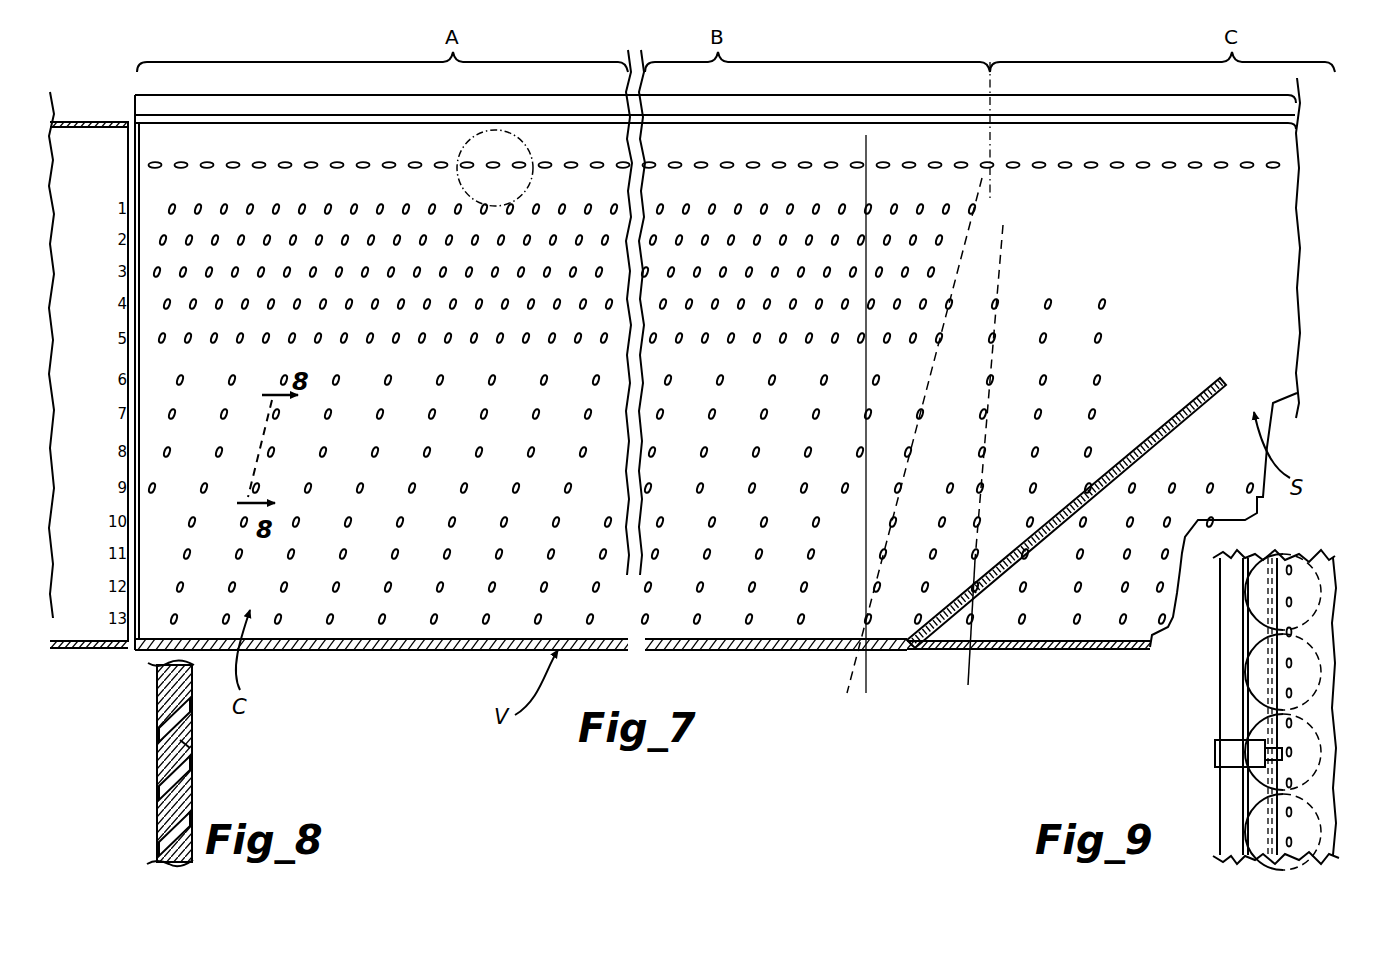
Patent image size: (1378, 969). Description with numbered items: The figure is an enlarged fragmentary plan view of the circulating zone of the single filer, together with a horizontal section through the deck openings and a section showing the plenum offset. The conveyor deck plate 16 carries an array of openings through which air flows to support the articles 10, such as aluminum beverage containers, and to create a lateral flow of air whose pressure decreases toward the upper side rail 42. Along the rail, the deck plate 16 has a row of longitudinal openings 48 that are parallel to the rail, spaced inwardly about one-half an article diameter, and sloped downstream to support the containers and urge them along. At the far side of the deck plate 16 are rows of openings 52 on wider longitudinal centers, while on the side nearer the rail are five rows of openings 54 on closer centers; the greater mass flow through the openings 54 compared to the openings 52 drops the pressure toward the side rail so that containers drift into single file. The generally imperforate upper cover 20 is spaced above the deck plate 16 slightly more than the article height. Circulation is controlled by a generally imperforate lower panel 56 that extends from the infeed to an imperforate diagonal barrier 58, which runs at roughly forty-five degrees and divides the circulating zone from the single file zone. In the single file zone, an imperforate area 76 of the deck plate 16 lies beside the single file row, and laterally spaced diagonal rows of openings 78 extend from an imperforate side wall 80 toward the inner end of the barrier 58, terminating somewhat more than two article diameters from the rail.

In FIG. 7, the article 10 is at (522, 130).
In FIG. 9, the article 10 is at (1258, 728).
In FIG. 7, the deck plate 16 is at (152, 142).
In FIG. 8, the deck plate 16 is at (160, 762).
In FIG. 9, the upper cover 20 is at (1300, 615).
In FIG. 7, the upper side rail 42 is at (492, 120).
In FIG. 9, the upper side rail 42 is at (1232, 732).
In FIG. 7, the longitudinal openings 48 is at (491, 165).
In FIG. 7, the openings 52 is at (490, 589).
In FIG. 7, the openings 54 is at (345, 207).
In FIG. 8, the openings 54 is at (185, 742).
In FIG. 7, the lower panel 56 is at (312, 650).
In FIG. 7, the diagonal barrier 58 is at (1042, 524).
In FIG. 7, the imperforate area 76 is at (1262, 231).
In FIG. 7, the diagonal rows of openings 78 is at (1097, 380).
In FIG. 7, the imperforate side wall 80 is at (1000, 650).